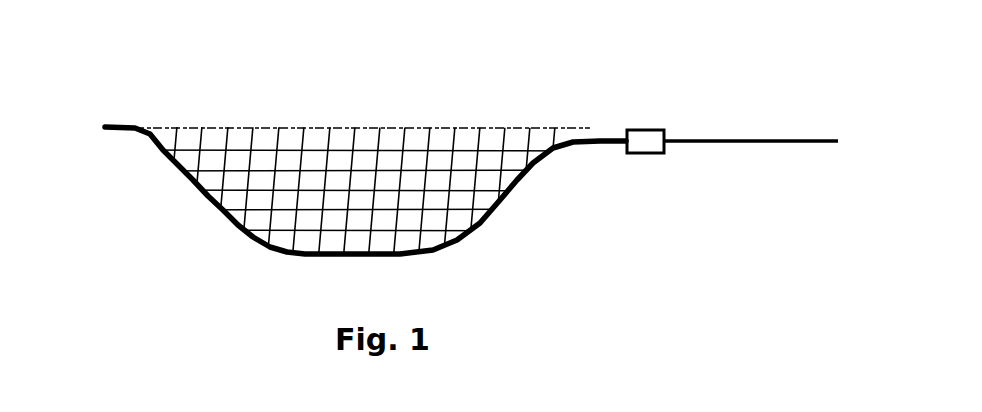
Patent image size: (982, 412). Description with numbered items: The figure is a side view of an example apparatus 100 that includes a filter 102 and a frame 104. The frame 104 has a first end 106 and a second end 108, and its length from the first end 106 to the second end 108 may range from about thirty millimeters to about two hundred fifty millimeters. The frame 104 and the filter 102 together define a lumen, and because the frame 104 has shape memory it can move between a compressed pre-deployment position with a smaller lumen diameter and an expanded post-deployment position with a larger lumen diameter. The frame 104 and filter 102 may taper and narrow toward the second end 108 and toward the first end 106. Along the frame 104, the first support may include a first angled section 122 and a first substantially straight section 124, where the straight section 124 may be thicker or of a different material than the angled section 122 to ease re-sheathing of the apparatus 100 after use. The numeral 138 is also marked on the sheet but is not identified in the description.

The net assembly 100 is at (178, 72).
The mesh netting 102 is at (405, 140).
The net frame / rim 104 is at (248, 238).
The first end of net 106 is at (92, 132).
The second end of net 108 is at (603, 159).
The coupling / connector 122 is at (638, 129).
The handle shaft 124 is at (752, 140).
The component of second figure 138 is at (692, 411).